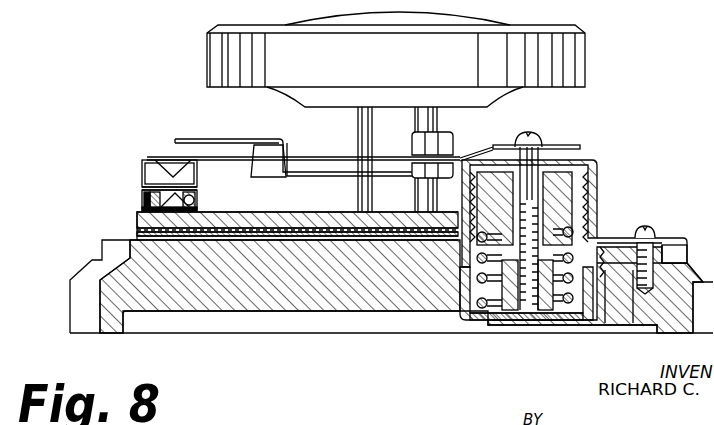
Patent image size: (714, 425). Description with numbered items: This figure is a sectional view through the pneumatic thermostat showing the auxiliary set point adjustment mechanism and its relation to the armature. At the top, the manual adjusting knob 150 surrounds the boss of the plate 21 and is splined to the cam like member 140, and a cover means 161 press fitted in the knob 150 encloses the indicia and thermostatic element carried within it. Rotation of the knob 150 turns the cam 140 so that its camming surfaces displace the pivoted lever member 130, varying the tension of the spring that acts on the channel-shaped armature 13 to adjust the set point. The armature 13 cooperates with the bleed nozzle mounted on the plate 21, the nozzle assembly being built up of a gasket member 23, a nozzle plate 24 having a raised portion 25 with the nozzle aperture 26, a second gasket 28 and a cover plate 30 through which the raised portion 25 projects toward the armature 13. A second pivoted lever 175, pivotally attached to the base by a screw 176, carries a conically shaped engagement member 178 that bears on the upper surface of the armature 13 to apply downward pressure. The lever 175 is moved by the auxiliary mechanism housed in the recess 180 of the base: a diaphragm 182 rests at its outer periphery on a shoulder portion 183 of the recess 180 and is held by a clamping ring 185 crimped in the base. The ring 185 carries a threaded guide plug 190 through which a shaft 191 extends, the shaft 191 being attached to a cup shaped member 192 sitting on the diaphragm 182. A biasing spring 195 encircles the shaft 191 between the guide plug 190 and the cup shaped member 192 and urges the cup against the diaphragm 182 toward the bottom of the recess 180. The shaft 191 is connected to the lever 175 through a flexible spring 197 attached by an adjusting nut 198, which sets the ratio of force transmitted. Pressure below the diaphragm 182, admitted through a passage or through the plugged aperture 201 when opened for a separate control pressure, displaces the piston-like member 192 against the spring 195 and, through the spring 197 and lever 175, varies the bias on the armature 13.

The armature member 13 is at (192, 168).
The plate 21 is at (147, 220).
The gasket member 23 is at (143, 215).
The nozzle plate 24 is at (145, 210).
The raised portion 25 is at (197, 188).
The aperture 26 is at (145, 194).
The second gasket 28 is at (148, 204).
The cover plate 30 is at (197, 202).
The pivoted lever member 130 is at (208, 139).
The cam like member 140 is at (352, 195).
The manual adjusting knob 150 is at (578, 53).
The cover means 161 is at (467, 23).
The second pivoted lever 175 is at (305, 157).
The screw 176 is at (651, 232).
The conically shaped engagement member 178 is at (167, 155).
The aperture 180 is at (598, 312).
The diaphragm 182 is at (622, 250).
The shoulder portion 183 is at (645, 320).
The clamping ring 185 is at (617, 257).
The guide plug 190 is at (570, 172).
The shaft 191 is at (548, 178).
The cup shaped member 192 is at (566, 265).
The biasing spring 195 is at (463, 214).
The flexible spring 197 is at (500, 144).
The adjusting nut 198 is at (447, 140).
The plugged aperture 201 is at (490, 320).